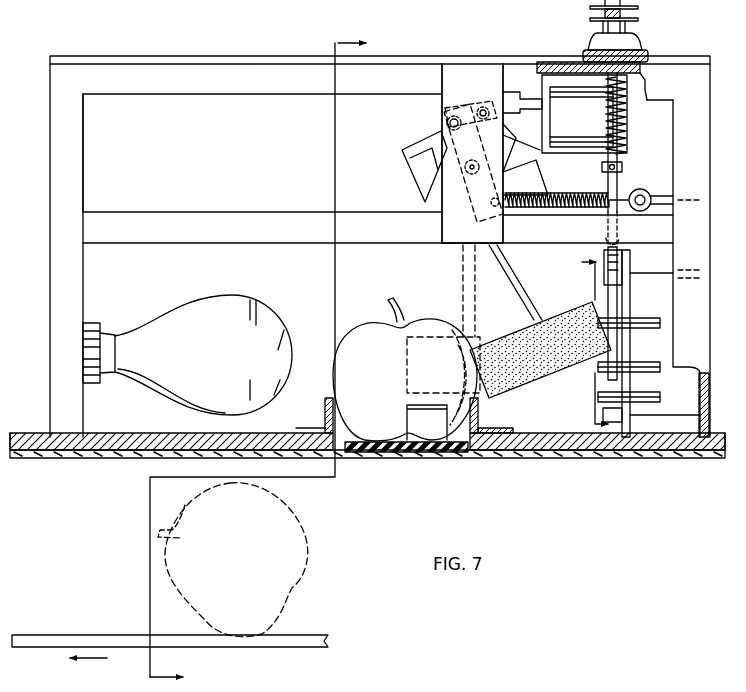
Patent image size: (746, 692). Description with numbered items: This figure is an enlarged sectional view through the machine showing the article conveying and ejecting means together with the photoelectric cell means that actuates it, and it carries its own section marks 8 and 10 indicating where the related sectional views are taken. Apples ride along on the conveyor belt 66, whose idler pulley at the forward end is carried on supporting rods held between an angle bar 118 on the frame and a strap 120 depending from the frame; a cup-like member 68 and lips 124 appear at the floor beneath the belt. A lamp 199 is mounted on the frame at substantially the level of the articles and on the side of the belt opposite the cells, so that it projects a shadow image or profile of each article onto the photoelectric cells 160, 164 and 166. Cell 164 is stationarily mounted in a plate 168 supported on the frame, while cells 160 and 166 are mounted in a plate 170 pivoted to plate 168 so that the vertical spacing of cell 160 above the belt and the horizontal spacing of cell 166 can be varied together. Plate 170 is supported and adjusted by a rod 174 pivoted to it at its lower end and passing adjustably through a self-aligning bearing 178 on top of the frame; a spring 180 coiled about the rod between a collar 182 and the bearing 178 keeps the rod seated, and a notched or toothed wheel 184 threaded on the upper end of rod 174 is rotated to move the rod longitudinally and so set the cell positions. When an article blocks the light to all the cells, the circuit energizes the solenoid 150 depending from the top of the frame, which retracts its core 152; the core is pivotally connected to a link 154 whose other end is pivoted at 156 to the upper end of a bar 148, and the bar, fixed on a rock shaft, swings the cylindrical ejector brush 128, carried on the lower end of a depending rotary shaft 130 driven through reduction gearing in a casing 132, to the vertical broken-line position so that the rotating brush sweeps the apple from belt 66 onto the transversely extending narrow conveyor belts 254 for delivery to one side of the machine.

The angle bar 118 is at (188, 68).
The strap 120 is at (188, 68).
The section line / apparatus 10 is at (241, 360).
The section line 8 is at (587, 346).
The belt 66 is at (412, 455).
The cup 68 is at (410, 422).
The lip 124 is at (327, 415).
The cylindrical brush 128 is at (552, 320).
The rotary shaft 130 is at (523, 263).
The casing 132 is at (522, 180).
The bar 148 is at (477, 196).
The solenoid 150 is at (592, 123).
The solenoid core 152 is at (515, 92).
The link 154 is at (472, 108).
The pivot 156 is at (448, 122).
The photoelectric cell 160 is at (642, 320).
The photoelectric cell 164 is at (603, 376).
The photoelectric cell 166 is at (600, 410).
The plate 168 is at (624, 262).
The plate 170 is at (612, 357).
The rod 174 is at (620, 188).
The self-aligning bearing 178 is at (628, 43).
The spring 180 is at (622, 128).
The collar 182 is at (624, 163).
The notched or toothed wheel 184 is at (640, 13).
The lamp 199 is at (187, 330).
The narrow conveyor belts 254 is at (288, 640).